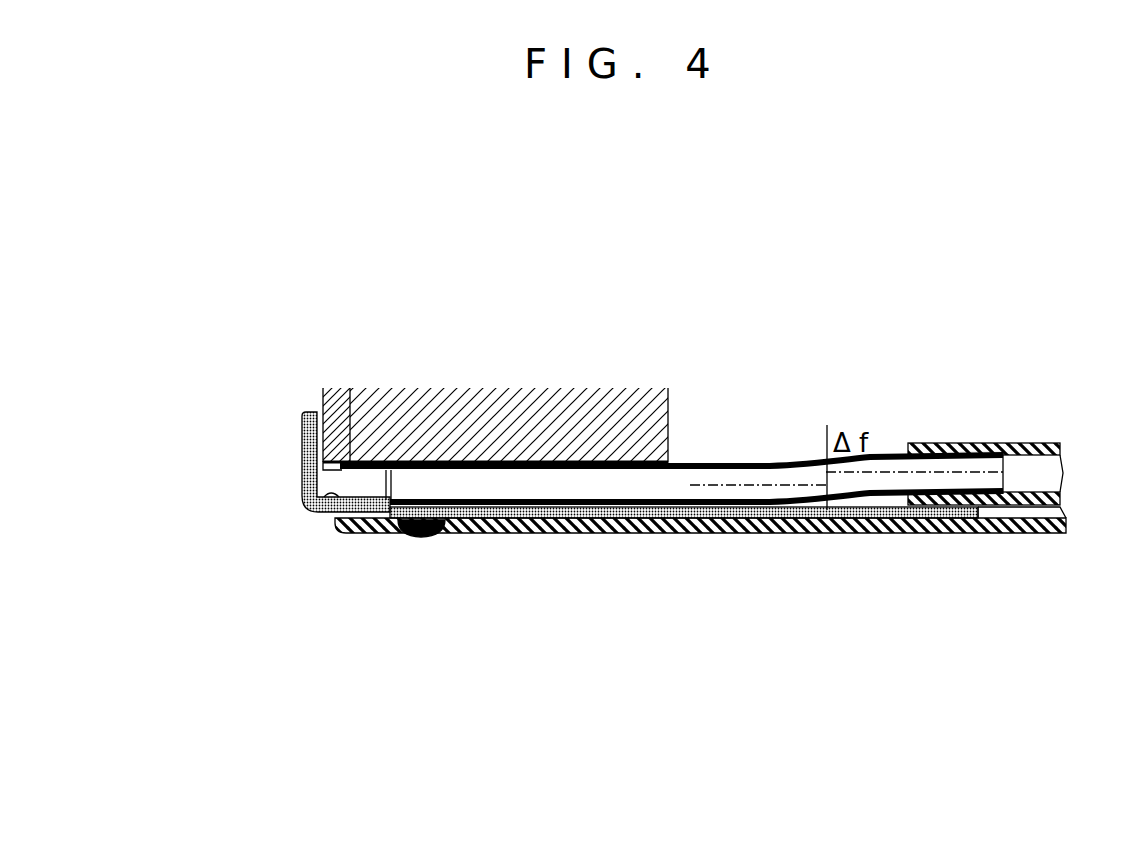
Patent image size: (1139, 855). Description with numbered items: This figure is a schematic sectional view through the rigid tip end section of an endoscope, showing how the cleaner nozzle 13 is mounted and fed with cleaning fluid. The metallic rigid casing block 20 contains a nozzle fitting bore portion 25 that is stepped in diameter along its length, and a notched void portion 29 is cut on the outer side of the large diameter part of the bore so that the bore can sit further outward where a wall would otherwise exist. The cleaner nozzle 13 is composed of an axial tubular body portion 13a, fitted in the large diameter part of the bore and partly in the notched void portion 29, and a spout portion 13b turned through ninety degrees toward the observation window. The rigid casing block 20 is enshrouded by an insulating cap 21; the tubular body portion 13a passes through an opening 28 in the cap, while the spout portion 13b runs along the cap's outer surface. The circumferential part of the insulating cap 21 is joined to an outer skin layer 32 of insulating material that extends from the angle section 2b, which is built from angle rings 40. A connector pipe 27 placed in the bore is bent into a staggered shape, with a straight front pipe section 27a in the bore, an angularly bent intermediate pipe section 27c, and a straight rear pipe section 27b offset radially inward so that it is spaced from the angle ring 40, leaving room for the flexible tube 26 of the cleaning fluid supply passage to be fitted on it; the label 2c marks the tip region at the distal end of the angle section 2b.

The angle section 2b is at (933, 540).
The tube end portion 2c is at (343, 537).
The cleaner nozzle 13 is at (300, 461).
The tubular body portion 13a is at (374, 515).
The spout portion 13b is at (302, 420).
The rigid casing block 20 is at (517, 407).
The insulating cap 21 is at (338, 390).
The nozzle fitting bore portion 25 is at (586, 504).
The flexible tube 26 is at (1033, 443).
The connector pipe 27 is at (778, 460).
The straight front pipe section 27a is at (516, 518).
The straight rear pipe section 27b is at (968, 443).
The angularly bent intermediate pipe section 27c is at (857, 505).
The opening 28 is at (332, 498).
The notched void portion 29 is at (418, 490).
The outer skin layer 32 is at (1023, 533).
The angle ring 40 is at (740, 533).